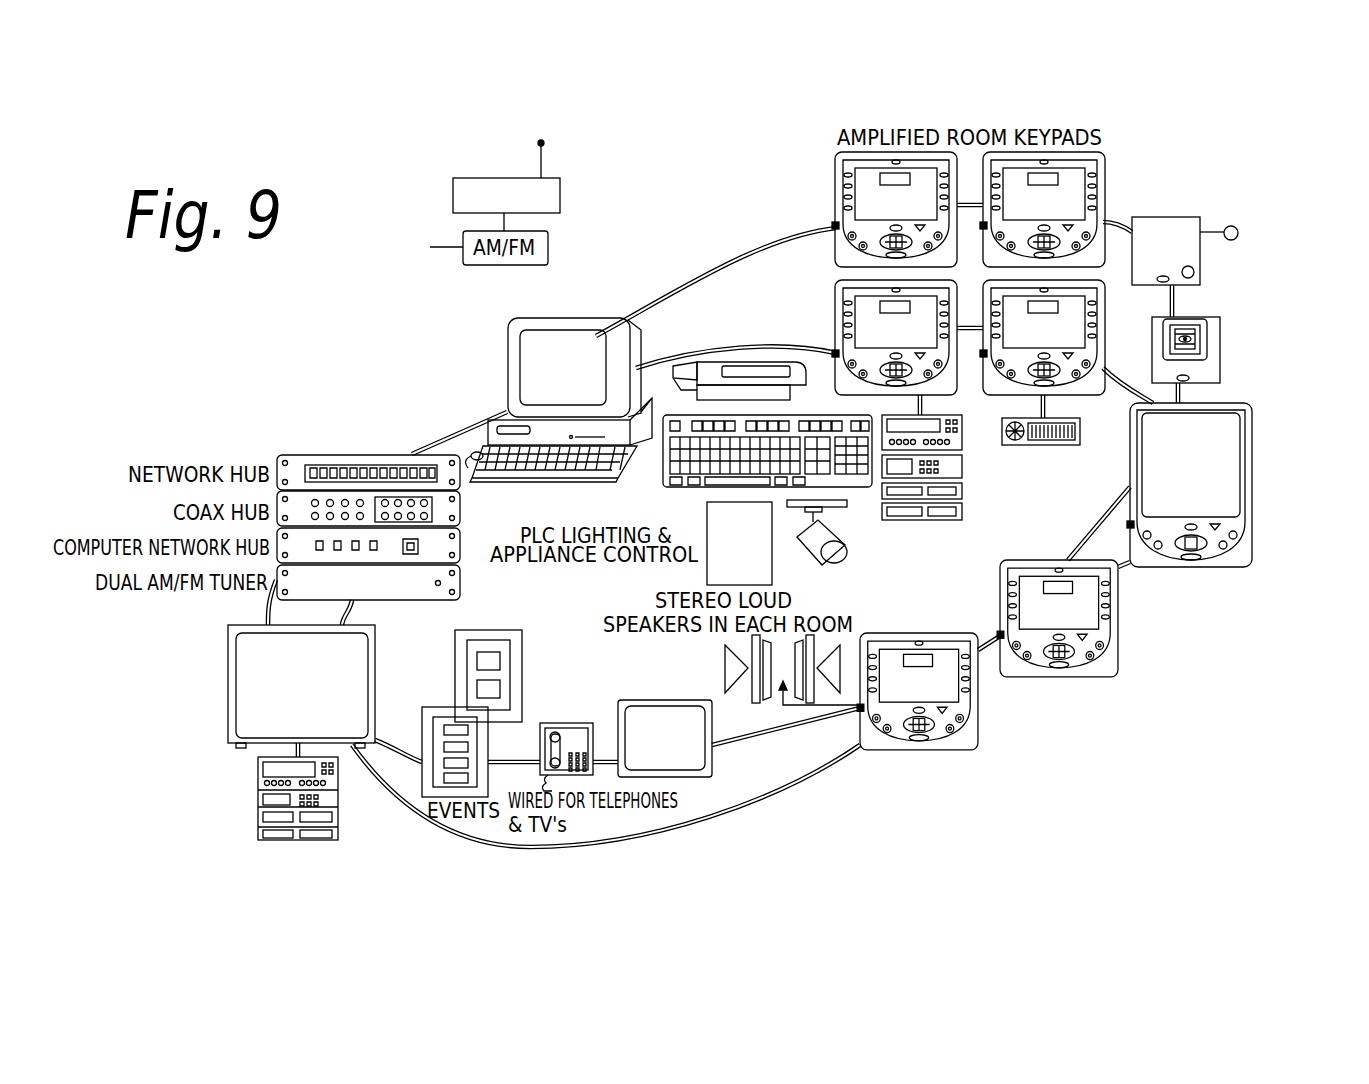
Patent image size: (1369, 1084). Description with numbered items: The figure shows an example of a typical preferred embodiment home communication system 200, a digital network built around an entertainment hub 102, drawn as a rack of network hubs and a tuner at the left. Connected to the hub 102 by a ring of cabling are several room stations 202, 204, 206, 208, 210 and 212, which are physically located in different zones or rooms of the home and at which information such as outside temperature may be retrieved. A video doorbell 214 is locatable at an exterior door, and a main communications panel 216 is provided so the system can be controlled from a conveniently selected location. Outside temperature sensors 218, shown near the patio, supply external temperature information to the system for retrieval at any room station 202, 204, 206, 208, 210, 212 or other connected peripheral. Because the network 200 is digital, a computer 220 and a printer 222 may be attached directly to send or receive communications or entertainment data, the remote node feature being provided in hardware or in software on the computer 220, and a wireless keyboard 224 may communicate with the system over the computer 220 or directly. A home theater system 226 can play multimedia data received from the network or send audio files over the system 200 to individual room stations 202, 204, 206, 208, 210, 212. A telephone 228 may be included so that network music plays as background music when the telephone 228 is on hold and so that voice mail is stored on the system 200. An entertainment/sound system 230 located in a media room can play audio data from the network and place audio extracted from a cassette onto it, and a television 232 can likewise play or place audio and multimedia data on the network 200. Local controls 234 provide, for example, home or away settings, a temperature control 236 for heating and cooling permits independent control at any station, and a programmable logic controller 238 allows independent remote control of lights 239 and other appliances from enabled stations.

The entertainment hub 102 is at (300, 454).
The home communication system 200 is at (1202, 668).
The room station 202 is at (835, 180).
The room station 204 is at (835, 300).
The room station 206 is at (930, 751).
The room station 208 is at (1072, 678).
The room station 210 is at (1104, 307).
The room station 212 is at (1106, 187).
The video doorbell 214 is at (1221, 380).
The main communications panel 216 is at (1253, 556).
The outside temperature sensor 218 is at (1234, 227).
The computer 220 is at (563, 478).
The printer 222 is at (697, 366).
The wireless keyboard 224 is at (665, 486).
The home theater system 226 is at (240, 748).
The telephone 228 is at (567, 723).
The entertainment/sound system 230 is at (963, 517).
The television 232 is at (702, 779).
The local control 234 is at (522, 647).
The temperature control 236 is at (1081, 430).
The programmable logic controller 238 is at (707, 571).
The light 239 is at (833, 548).